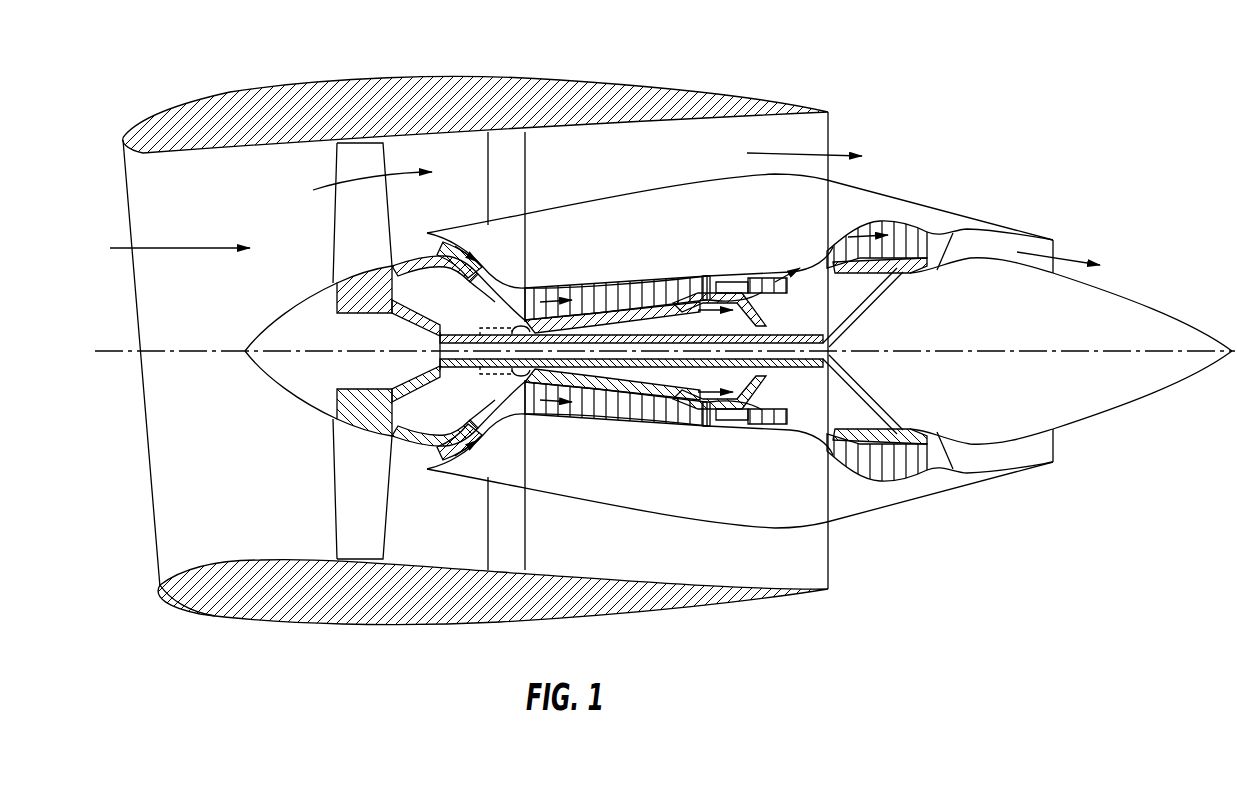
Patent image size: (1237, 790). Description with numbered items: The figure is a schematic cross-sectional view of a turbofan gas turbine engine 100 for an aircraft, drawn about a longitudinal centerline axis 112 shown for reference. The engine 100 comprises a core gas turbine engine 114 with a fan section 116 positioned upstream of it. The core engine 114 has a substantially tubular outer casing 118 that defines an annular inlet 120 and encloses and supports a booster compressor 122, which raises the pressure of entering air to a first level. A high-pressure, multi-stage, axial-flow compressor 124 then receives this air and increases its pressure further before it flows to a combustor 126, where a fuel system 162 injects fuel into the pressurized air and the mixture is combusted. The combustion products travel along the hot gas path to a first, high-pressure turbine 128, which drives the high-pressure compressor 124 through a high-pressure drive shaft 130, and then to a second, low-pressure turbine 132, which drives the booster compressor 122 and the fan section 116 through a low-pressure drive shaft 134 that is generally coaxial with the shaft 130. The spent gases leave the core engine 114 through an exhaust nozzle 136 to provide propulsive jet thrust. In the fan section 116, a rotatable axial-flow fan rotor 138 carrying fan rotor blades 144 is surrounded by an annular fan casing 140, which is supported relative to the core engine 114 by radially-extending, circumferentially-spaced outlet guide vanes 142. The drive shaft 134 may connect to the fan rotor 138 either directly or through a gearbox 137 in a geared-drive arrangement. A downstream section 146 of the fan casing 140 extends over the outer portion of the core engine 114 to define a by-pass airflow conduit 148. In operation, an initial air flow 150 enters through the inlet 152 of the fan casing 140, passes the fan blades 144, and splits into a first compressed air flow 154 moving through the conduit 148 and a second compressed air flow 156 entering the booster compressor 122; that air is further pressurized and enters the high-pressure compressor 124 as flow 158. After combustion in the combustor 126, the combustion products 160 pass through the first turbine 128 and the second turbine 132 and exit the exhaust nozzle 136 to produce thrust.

The gas turbine engine 100 is at (968, 100).
The longitudinal centerline axis 112 is at (993, 350).
The core gas turbine engine 114 is at (680, 222).
The fan section 116 is at (366, 62).
The outer casing 118 is at (682, 515).
The annular inlet 120 is at (432, 460).
The booster compressor 122 is at (483, 432).
The high-pressure compressor 124 is at (557, 405).
The combustor 126 is at (727, 412).
The high-pressure turbine 128 is at (793, 423).
The high-pressure drive shaft 130 is at (772, 310).
The low-pressure turbine 132 is at (970, 465).
The low-pressure drive shaft 134 is at (492, 328).
The exhaust nozzle 136 is at (1055, 249).
The gearbox 137 is at (497, 325).
The fan rotor 138 is at (397, 315).
The fan casing 140 is at (373, 623).
The outlet guide vanes 142 is at (527, 142).
The fan rotor blades 144 is at (338, 512).
The downstream section of fan casing 146 is at (690, 92).
The by-pass airflow conduit 148 is at (632, 168).
The initial air flow 150 is at (205, 247).
The inlet 152 is at (153, 565).
The first compressed air flow 154 is at (352, 178).
The second compressed air flow 156 is at (408, 245).
The air flow into high-pressure compressor 158 is at (553, 302).
The combustion products 160 is at (767, 280).
The fuel system 162 is at (707, 276).